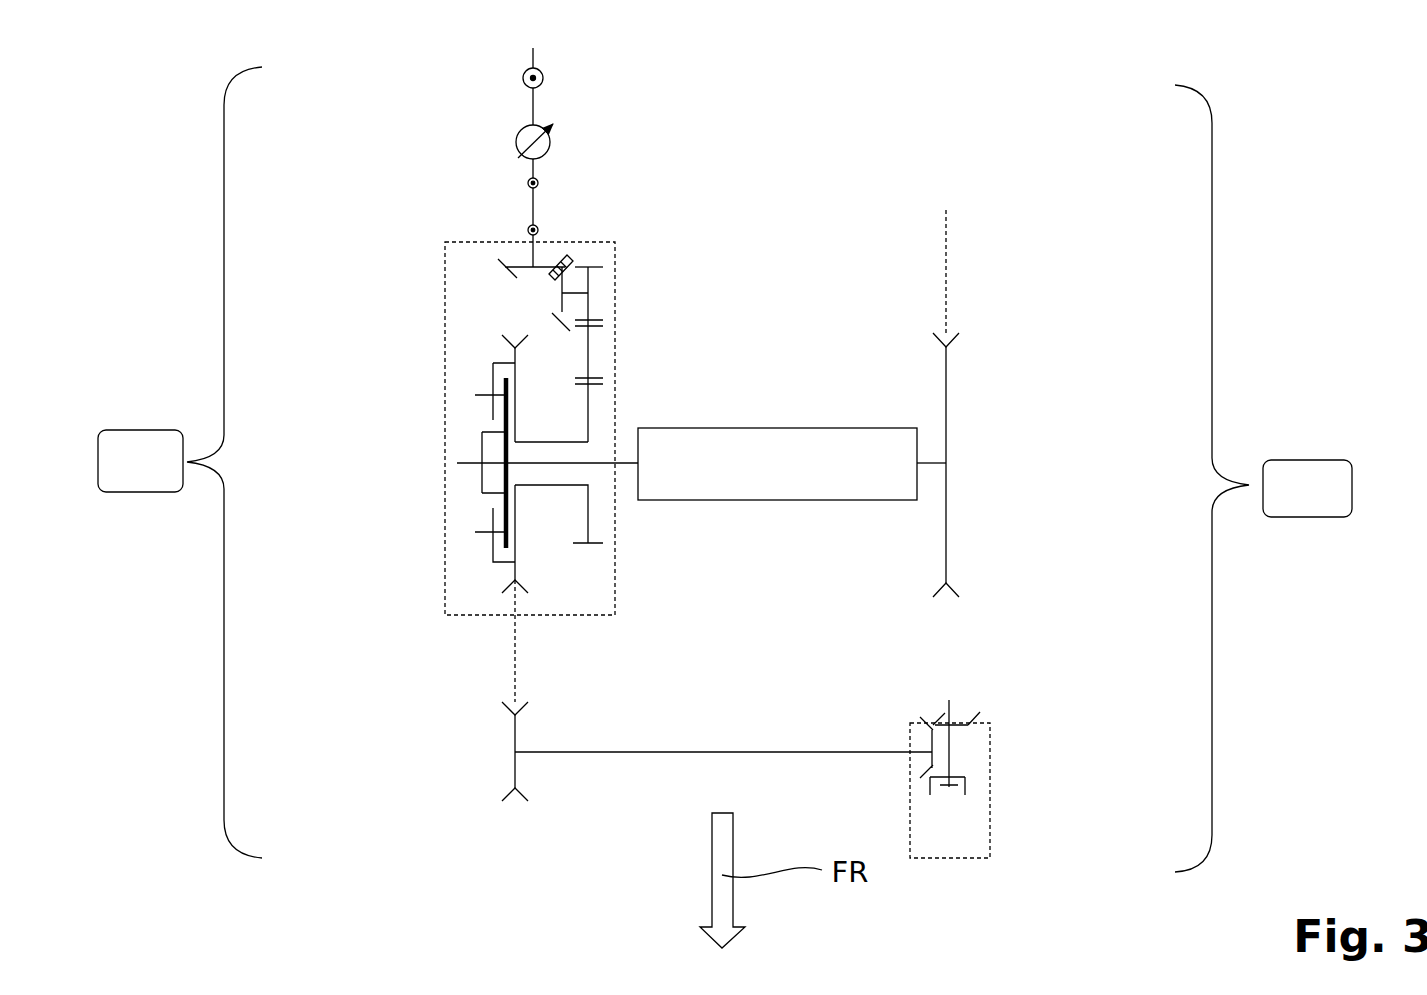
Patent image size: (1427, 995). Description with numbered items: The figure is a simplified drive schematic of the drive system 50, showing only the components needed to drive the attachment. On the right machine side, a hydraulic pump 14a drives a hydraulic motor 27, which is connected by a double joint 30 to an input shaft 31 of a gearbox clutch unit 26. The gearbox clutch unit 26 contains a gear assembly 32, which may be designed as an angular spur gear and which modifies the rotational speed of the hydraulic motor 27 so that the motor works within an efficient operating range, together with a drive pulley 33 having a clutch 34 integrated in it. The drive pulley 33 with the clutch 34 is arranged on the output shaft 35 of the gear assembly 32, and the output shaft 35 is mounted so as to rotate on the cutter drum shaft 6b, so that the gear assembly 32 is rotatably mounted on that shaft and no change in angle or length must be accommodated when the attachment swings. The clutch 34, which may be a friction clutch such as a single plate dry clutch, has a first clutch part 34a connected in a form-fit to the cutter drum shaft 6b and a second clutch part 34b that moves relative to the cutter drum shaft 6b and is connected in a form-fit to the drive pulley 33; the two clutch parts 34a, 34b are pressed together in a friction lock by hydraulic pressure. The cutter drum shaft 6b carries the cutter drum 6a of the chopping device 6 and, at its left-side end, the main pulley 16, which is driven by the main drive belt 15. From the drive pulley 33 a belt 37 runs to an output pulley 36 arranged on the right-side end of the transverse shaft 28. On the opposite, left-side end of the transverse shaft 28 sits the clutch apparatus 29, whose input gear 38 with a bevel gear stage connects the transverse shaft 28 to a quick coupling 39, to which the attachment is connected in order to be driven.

The drive system 50 is at (157, 210).
The hydraulic pump 14a is at (544, 78).
The hydraulic motor 27 is at (516, 140).
The double joint 30 is at (537, 200).
The input shaft 31 is at (527, 245).
The gear assembly 32 is at (592, 262).
The gearbox clutch unit 26 is at (437, 300).
The drive pulley 33 is at (500, 357).
The clutch 34 is at (490, 455).
The first clutch part 34a is at (512, 428).
The second clutch part 34b is at (503, 500).
The output shaft 35 is at (547, 487).
The output pulley 36 is at (515, 737).
The belt 37 is at (515, 633).
The transverse shaft 28 is at (738, 748).
The clutch apparatus 29 is at (992, 765).
The input gear 38 is at (957, 722).
The quick coupling 39 is at (965, 790).
The chopping device 6 is at (730, 400).
The cutter drum 6a is at (775, 443).
The cutter drum shaft 6b is at (930, 462).
The main drive belt 15 is at (946, 268).
The main pulley 16 is at (946, 400).